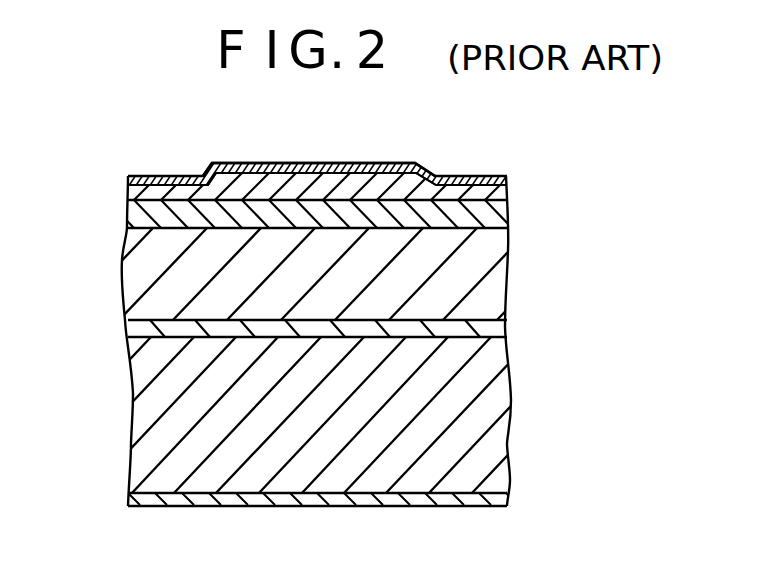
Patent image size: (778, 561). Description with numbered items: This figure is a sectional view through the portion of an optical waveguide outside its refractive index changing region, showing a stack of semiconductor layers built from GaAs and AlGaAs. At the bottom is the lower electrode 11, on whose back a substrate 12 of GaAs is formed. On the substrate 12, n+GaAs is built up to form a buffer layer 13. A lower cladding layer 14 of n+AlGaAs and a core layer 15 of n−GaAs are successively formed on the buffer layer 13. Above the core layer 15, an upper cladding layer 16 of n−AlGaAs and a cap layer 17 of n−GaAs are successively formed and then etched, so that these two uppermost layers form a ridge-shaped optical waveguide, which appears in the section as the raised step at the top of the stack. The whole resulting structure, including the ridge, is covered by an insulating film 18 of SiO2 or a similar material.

The lower electrode 11 is at (487, 503).
The substrate 12 is at (493, 407).
The buffer layer 13 is at (487, 330).
The lower cladding layer 14 is at (493, 283).
The core layer 15 is at (493, 218).
The upper cladding layer 16 is at (492, 192).
The cap layer 17 is at (384, 165).
The insulating film 18 is at (507, 180).